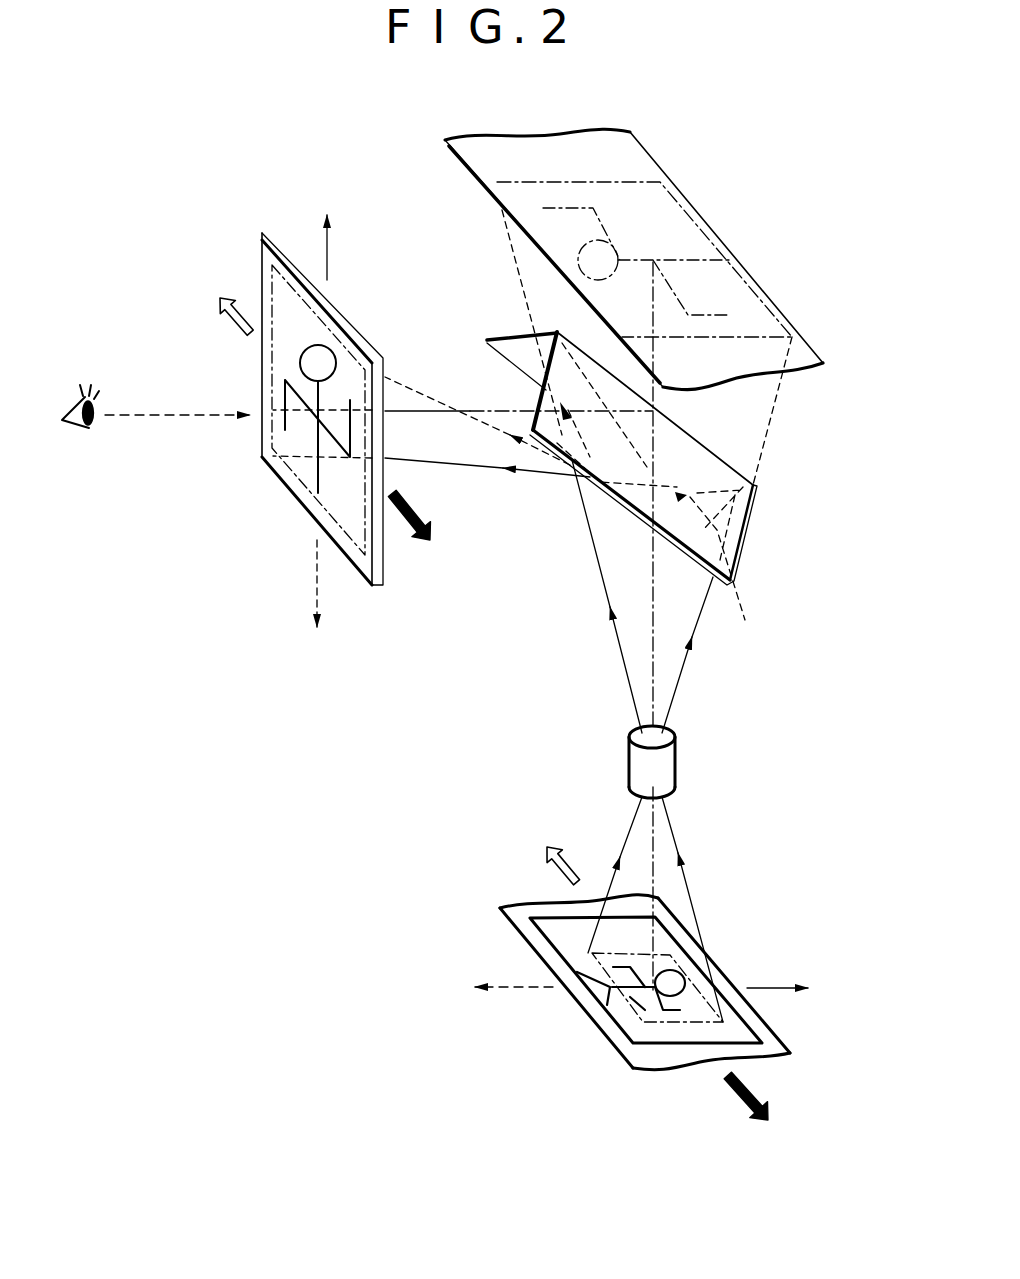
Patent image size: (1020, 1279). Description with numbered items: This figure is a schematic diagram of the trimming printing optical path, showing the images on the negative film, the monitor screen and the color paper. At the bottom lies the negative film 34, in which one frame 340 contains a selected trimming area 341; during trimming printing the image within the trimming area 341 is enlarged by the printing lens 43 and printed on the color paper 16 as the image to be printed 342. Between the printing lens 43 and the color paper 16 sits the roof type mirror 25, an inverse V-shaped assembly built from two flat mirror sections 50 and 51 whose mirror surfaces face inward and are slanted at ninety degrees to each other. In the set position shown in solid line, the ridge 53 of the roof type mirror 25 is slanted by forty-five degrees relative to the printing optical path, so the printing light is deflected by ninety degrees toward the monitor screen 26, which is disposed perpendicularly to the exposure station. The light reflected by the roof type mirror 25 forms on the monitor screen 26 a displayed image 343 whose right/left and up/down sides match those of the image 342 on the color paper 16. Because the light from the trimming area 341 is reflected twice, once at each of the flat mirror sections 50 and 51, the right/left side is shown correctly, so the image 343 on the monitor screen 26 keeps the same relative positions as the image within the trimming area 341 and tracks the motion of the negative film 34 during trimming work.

The color paper 16 is at (634, 302).
The image to be printed 342 is at (687, 238).
The flat mirror section 51 is at (510, 352).
The ridge 53 is at (703, 446).
The roof type mirror 25 is at (689, 476).
The flat mirror section 50 is at (737, 570).
The monitor screen 26 is at (307, 442).
The displayed image 343 is at (317, 478).
The printing lens 43 is at (667, 770).
The negative film 34 is at (668, 977).
The frame 340 is at (540, 920).
The trimming area 341 is at (673, 1025).